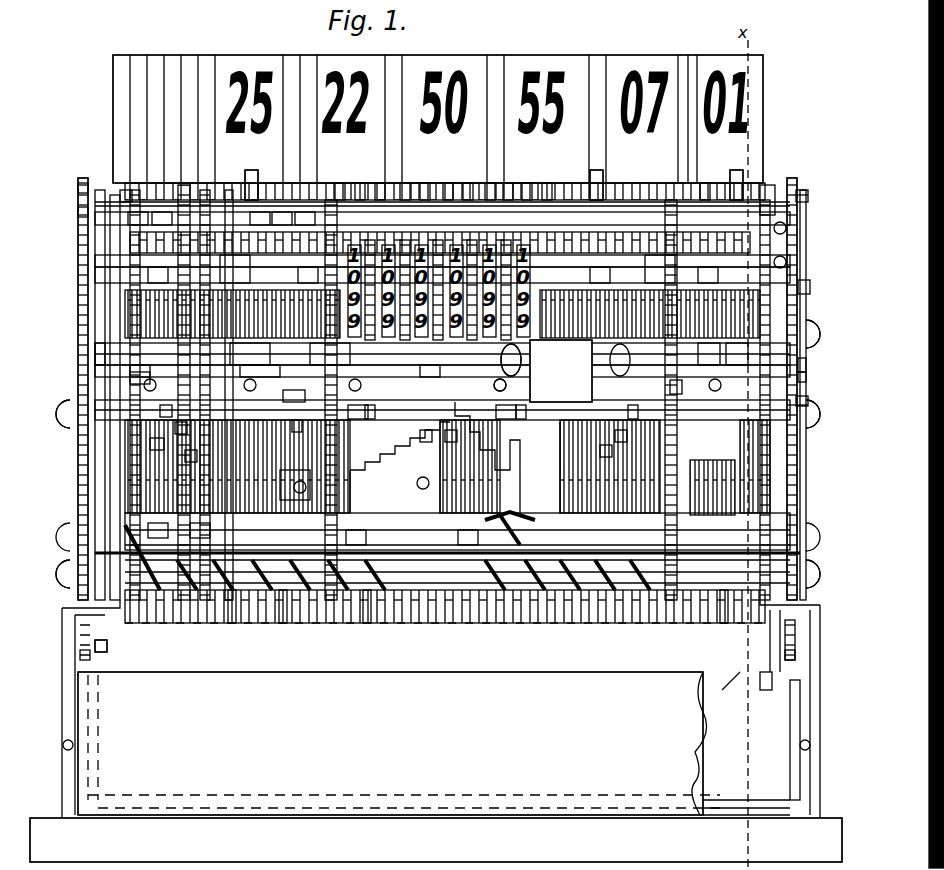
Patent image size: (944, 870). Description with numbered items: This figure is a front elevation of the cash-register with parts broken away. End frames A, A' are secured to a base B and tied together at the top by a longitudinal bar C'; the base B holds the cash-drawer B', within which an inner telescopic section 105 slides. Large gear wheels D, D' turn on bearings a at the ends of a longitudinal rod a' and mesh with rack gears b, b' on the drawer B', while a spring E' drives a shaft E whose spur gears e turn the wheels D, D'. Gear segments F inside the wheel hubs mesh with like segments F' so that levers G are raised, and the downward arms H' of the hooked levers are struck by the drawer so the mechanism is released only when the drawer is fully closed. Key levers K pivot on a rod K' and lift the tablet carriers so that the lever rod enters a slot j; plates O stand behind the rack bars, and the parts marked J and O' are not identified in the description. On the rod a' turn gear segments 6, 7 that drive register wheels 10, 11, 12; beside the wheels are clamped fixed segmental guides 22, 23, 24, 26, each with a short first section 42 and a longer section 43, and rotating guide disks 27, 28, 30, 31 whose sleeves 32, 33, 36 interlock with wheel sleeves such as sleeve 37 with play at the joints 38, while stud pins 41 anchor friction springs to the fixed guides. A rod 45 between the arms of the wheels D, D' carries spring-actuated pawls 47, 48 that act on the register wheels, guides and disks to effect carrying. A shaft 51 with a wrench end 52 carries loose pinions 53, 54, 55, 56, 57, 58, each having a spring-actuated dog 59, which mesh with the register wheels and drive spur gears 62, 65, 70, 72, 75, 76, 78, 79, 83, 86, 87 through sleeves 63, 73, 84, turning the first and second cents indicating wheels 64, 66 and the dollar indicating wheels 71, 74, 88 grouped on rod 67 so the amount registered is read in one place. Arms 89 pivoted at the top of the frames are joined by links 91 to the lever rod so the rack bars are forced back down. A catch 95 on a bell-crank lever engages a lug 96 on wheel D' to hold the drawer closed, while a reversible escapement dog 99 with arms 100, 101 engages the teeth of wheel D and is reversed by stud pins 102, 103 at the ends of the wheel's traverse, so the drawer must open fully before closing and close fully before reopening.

The lug 96 is at (80, 188).
The lug 95 is at (80, 212).
The stud pin 102 is at (806, 196).
The arm 89 is at (790, 228).
The link 91 is at (790, 262).
The arm 100 is at (810, 291).
The reversible escapement dog 99 is at (806, 340).
The arm 101 is at (806, 379).
The stud pin 103 is at (806, 400).
The spur gear 83 is at (260, 217).
The spur gear wheel 72 is at (282, 217).
The sleeve 84 is at (305, 217).
The remaining section 43 is at (138, 217).
The spur gear wheel 76 is at (162, 217).
The sleeve 73 is at (158, 274).
The first section 42 is at (225, 265).
The spur gear 87 is at (308, 274).
The spur gear 86 is at (340, 183).
The spur gear 78 is at (360, 183).
The fourth dollar register indicating wheel 88 is at (380, 183).
The spur gear wheel 75 is at (405, 183).
The spur gear 79 is at (425, 183).
The second dollar register indicating wheel 74 is at (448, 183).
The spur gear 70 is at (468, 183).
The first dollar register indicating wheel 71 is at (490, 183).
The spur gear 65 is at (508, 183).
The second cents register indicating wheel 66 is at (527, 183).
The first cents register indicating wheel 64 is at (547, 183).
The sleeve 63 is at (600, 274).
The spur gear 62 is at (665, 270).
The rod 67 is at (708, 274).
The loose pinion 58 is at (140, 372).
The spring actuated dog 59 is at (140, 378).
The interlocking joint 38 is at (165, 412).
The fixed segmental guide 26 is at (180, 430).
The sleeve 36 is at (160, 445).
The sleeve 37 is at (190, 455).
The loose pinion 56 is at (240, 353).
The loose pinion 57 is at (250, 370).
The loose pinion 55 is at (320, 354).
The loose pinion 54 is at (430, 370).
The loose pinion 53 is at (709, 354).
The shaft 51 is at (737, 354).
The end 52 is at (483, 386).
The segment of gearing 7 is at (525, 353).
The segment of gearing 6 is at (680, 388).
The fixed segmental guide 24 is at (294, 396).
The fixed segmental guide 23 is at (358, 412).
The rotating guide disk 28 is at (372, 413).
The sleeve 33 is at (450, 435).
The fixed segmental guide 22 is at (506, 412).
The rotating guide disk 27 is at (524, 413).
The sleeve 32 is at (628, 413).
The register wheel 12 is at (300, 430).
The register wheel 11 is at (430, 440).
The register wheel 10 is at (625, 440).
The spring actuated pawl 48 is at (610, 455).
The rotating guide disk 31 is at (158, 530).
The rotating guide disk 30 is at (200, 530).
The spring actuated pawl 47 is at (356, 537).
The stud pin 41 is at (468, 537).
The rod 45 is at (538, 528).
The inner section 105 is at (737, 708).
The end frame A is at (429, 332).
The end frame A' is at (106, 174).
The gear wheel D is at (813, 403).
The gear wheel D' is at (59, 403).
The segment of gearing F is at (72, 354).
The segment of gearing F' is at (819, 365).
The bearing a is at (429, 414).
The longitudinal rod a' is at (458, 474).
The spur gear e is at (75, 556).
The base B is at (432, 770).
The cash-drawer B' is at (461, 743).
The rack gear b is at (814, 656).
The rack gear b' is at (60, 656).
The downward projecting arm H' is at (431, 647).
The spring E' is at (224, 618).
The shaft E is at (276, 618).
The key lever K is at (531, 551).
The rod K' is at (718, 621).
The lever G is at (705, 183).
The post J is at (494, 173).
The slot j is at (438, 119).
The opening O' is at (561, 371).
The plate O is at (353, 485).
The longitudinal bar C' is at (758, 696).